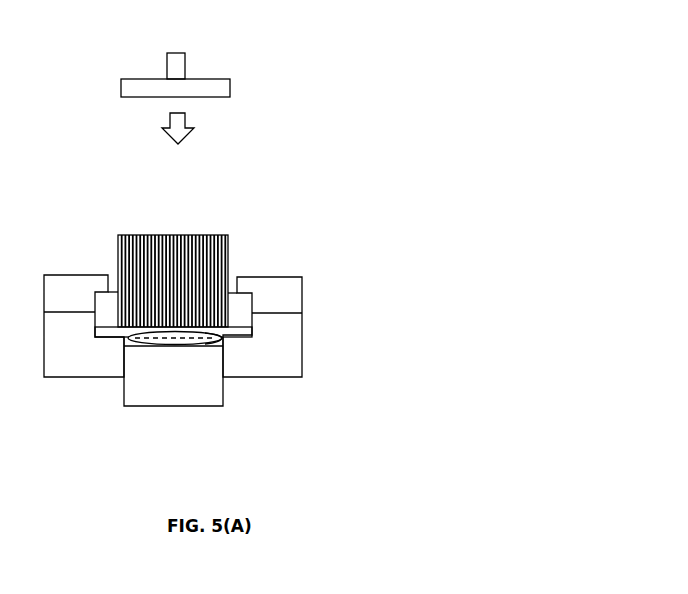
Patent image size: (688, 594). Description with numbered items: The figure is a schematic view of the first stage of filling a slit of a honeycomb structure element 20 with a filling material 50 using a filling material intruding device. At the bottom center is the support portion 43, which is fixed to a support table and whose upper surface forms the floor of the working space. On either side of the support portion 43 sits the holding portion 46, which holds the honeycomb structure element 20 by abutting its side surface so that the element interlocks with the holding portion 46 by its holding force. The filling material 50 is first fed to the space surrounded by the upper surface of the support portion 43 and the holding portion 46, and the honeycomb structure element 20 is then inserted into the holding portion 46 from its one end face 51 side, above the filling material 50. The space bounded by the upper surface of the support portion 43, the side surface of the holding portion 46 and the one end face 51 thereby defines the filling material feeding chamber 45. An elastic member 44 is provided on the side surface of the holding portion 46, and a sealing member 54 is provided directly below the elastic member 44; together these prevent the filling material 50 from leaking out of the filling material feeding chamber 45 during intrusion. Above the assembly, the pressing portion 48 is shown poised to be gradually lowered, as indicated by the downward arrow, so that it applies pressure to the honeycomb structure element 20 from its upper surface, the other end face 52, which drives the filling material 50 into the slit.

The honeycomb structure element 20 is at (219, 322).
The support portion 43 is at (167, 408).
The elastic member 44 is at (247, 290).
The filling material feeding chamber 45 is at (137, 325).
The holding portion 46 is at (302, 287).
The pressing portion 48 is at (230, 85).
The filling material 50 is at (160, 343).
The one end face 51 is at (222, 343).
The other end face 52 is at (170, 235).
The sealing member 54 is at (102, 338).